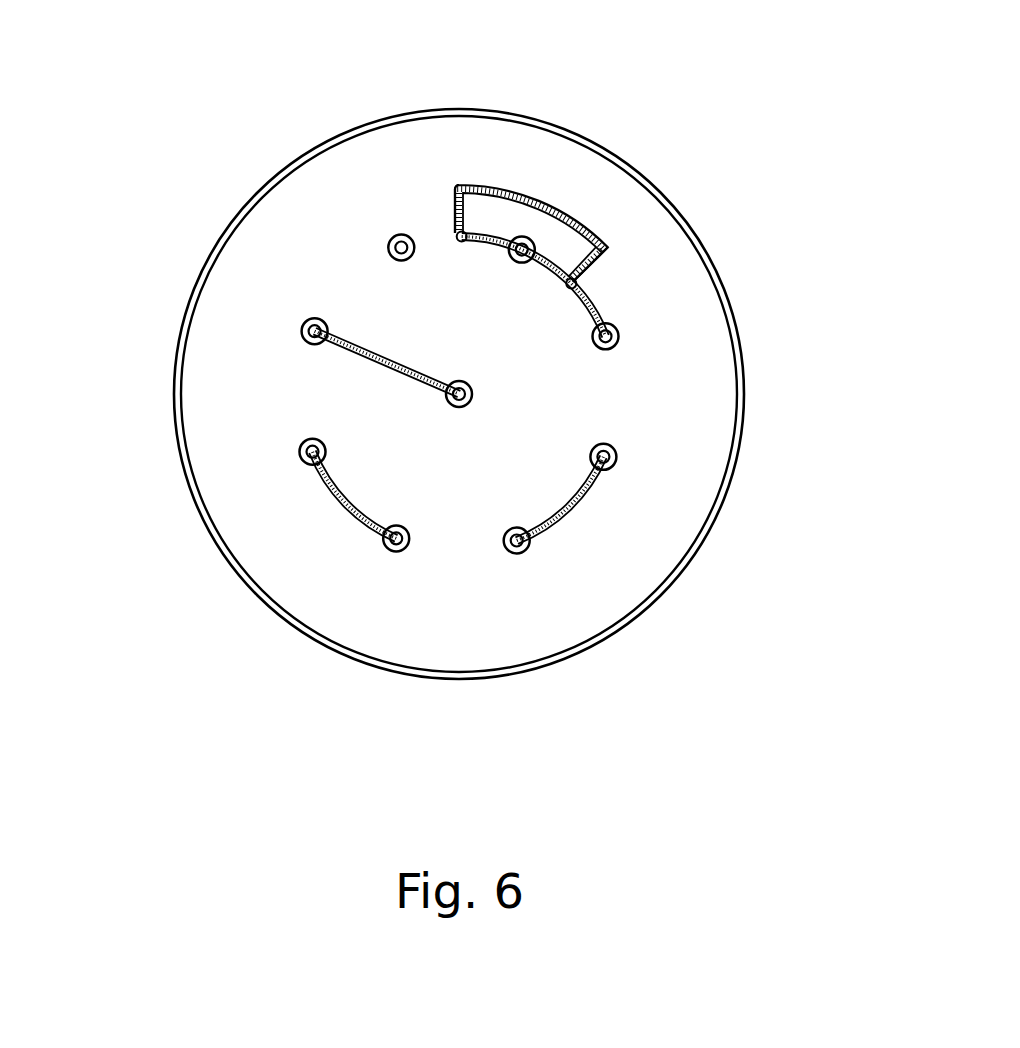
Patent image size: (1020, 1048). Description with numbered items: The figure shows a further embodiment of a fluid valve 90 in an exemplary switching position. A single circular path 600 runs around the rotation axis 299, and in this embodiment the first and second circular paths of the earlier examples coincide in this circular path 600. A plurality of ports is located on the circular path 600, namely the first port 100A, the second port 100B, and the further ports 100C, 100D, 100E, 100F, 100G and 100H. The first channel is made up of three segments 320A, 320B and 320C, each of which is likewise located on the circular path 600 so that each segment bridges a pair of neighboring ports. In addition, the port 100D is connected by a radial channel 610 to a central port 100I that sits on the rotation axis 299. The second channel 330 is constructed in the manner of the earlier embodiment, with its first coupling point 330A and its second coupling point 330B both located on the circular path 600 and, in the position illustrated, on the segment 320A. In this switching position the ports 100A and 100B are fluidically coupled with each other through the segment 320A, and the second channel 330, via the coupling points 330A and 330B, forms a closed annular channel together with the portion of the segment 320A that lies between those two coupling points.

The fluid valve 90 is at (590, 92).
The circular path 600 is at (350, 277).
The rotation axis 299 is at (477, 383).
The central port 100I is at (467, 406).
The radial channel 610 is at (370, 367).
The segment of the first channel 320A is at (576, 286).
The segment of the first channel 320B is at (582, 497).
The segment of the first channel 320C is at (350, 512).
The second channel 330 is at (483, 188).
The first coupling point 330A is at (457, 228).
The second coupling point 330B is at (610, 247).
The first port 100A is at (618, 339).
The second port 100B is at (530, 240).
The port 100C is at (401, 234).
The port 100D is at (302, 333).
The port 100E is at (308, 462).
The port 100F is at (397, 551).
The port 100G is at (526, 550).
The port 100H is at (617, 457).